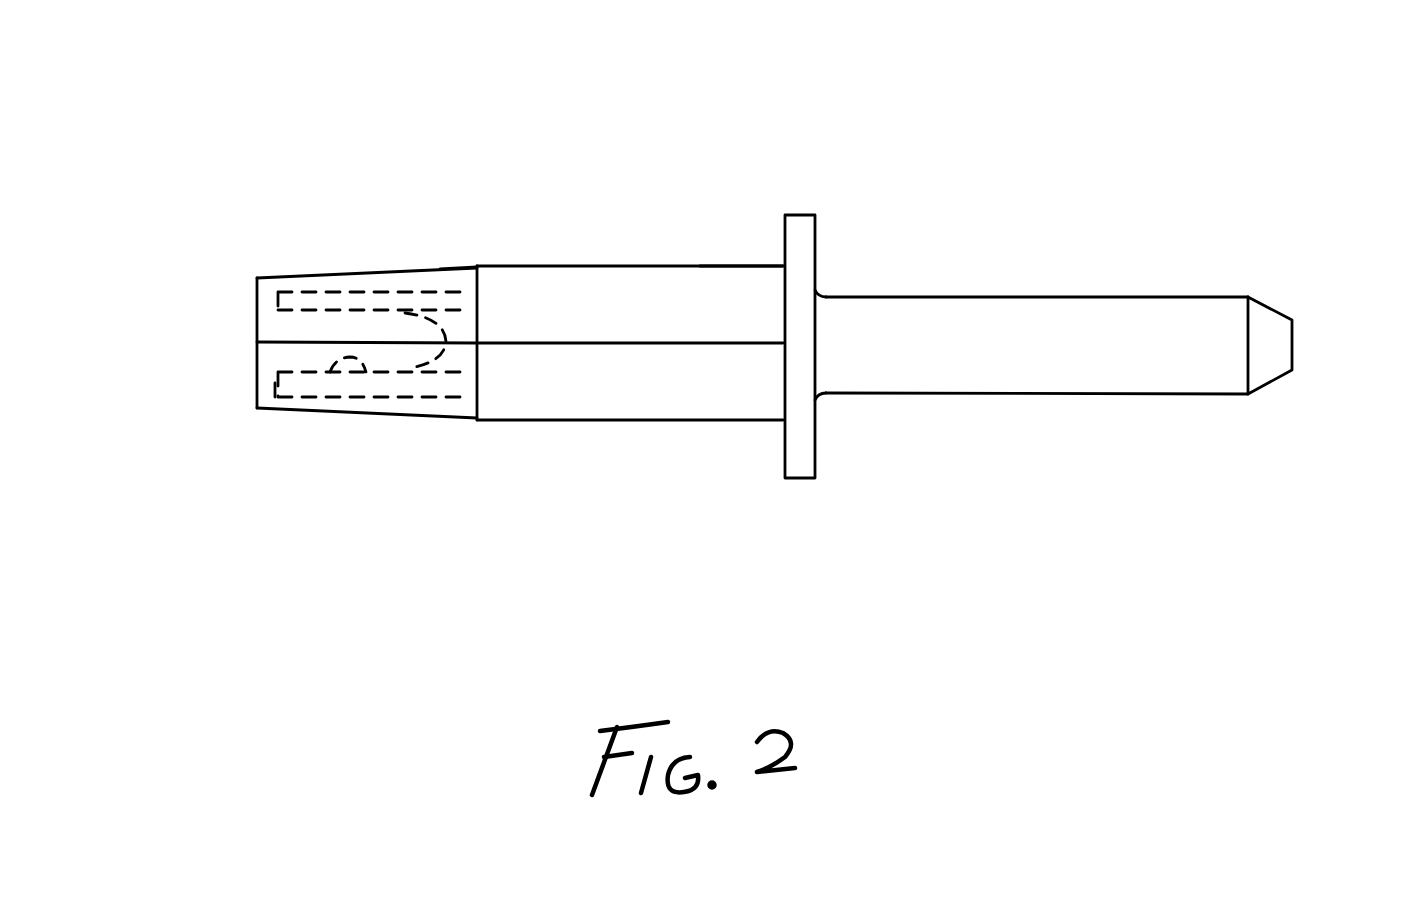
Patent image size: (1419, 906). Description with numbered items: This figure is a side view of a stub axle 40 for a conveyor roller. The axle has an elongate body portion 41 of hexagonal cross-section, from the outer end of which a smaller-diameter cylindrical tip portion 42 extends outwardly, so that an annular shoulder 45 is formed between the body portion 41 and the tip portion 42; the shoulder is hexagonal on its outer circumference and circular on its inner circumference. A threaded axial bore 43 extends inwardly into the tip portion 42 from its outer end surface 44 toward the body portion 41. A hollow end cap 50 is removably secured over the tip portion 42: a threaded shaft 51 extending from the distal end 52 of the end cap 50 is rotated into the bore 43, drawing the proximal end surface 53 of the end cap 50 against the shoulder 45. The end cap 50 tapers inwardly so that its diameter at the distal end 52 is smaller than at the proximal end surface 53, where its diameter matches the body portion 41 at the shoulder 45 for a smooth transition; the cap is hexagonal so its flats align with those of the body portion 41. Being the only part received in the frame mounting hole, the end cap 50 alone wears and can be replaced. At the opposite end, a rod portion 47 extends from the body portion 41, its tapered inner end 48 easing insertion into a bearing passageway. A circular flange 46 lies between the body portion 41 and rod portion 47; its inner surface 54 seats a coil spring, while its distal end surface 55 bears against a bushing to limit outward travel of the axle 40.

The stub axle 40 is at (492, 490).
The elongate body portion 41 is at (780, 206).
The cylindrical tip portion 42 is at (343, 300).
The threaded axial bore 43 is at (352, 372).
The outer end surface 44 is at (272, 390).
The annular shoulder 45 is at (444, 262).
The flange 46 is at (868, 70).
The rod portion 47 is at (1285, 456).
The inner end 48 is at (1268, 318).
The end cap 50 is at (293, 276).
The threaded shaft 51 is at (368, 383).
The distal end 52 is at (257, 307).
The proximal end surface 53 is at (478, 411).
The inner surface of flange 54 is at (927, 187).
The distal end surface of flange 55 is at (783, 243).